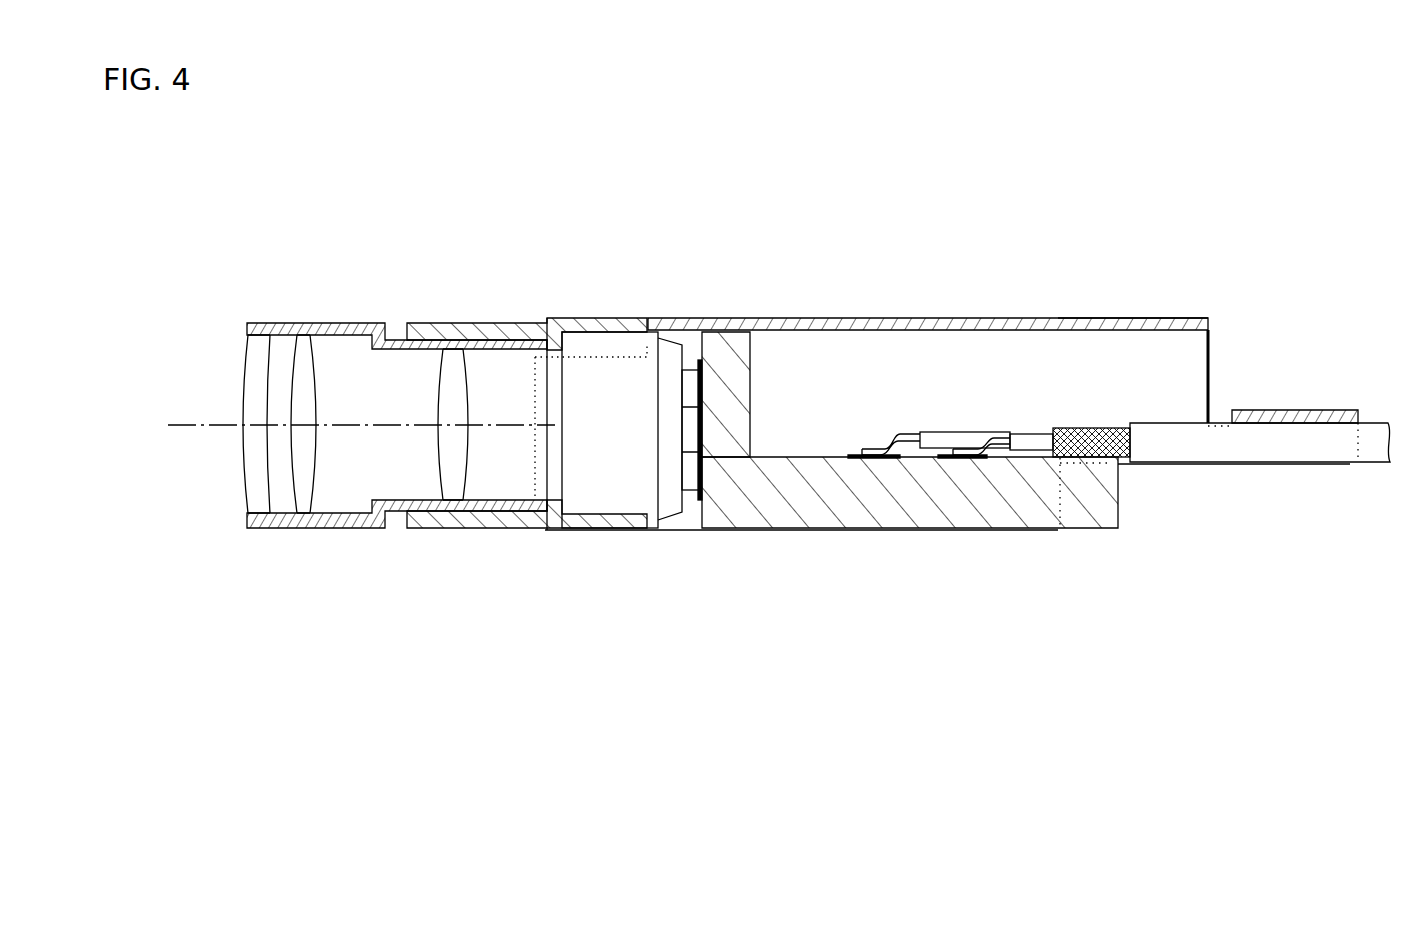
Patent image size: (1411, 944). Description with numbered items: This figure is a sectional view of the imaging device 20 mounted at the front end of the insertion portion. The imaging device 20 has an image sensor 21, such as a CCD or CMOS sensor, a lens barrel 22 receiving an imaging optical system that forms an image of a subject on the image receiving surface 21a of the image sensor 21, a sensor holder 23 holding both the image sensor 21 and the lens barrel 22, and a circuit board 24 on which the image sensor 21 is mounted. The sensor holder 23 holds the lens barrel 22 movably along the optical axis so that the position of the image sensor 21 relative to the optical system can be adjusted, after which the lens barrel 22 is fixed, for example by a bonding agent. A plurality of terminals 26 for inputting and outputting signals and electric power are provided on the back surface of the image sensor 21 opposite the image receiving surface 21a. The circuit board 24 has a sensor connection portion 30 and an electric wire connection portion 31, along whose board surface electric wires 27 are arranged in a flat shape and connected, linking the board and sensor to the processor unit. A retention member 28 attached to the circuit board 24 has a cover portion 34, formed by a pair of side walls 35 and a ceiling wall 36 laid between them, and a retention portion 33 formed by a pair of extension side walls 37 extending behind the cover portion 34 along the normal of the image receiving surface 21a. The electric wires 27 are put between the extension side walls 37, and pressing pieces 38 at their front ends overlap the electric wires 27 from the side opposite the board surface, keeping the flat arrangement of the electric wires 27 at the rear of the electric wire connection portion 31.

The imaging device 20 is at (241, 177).
The image sensor 21 is at (613, 505).
The image receiving surface 21a is at (562, 453).
The lens barrel 22 is at (312, 323).
The sensor holder 23 is at (498, 323).
The circuit board 24 is at (910, 355).
The terminals 26 is at (692, 363).
The electric wires 27 is at (1166, 455).
The retention member 28 is at (1175, 305).
The sensor connection portion 30 is at (727, 318).
The electric wire connection portion 31 is at (833, 457).
The retention portion 33 is at (1287, 410).
The cover portion 34 is at (1123, 318).
The side walls 35 is at (685, 530).
The ceiling wall 36 is at (985, 318).
The extension side walls 37 is at (1262, 465).
The pressing pieces 38 is at (1335, 410).